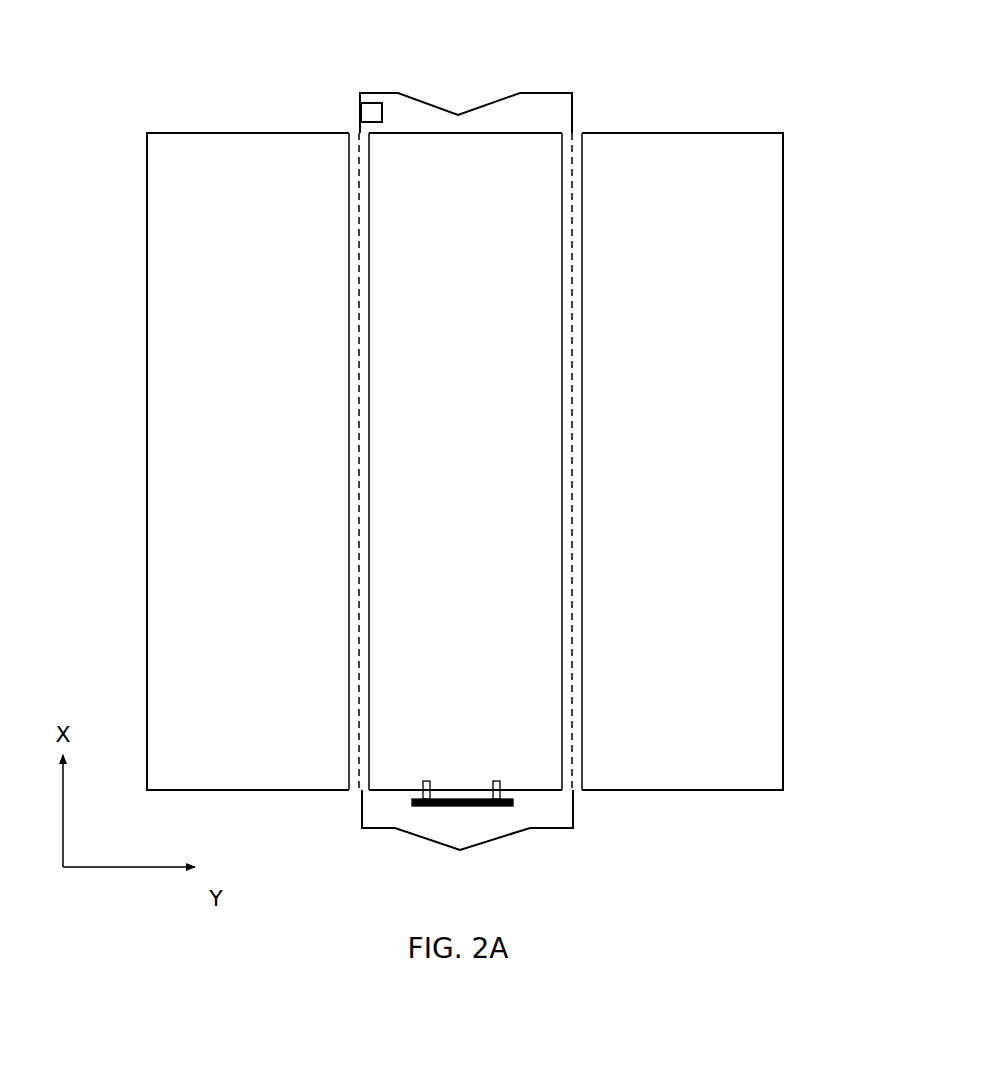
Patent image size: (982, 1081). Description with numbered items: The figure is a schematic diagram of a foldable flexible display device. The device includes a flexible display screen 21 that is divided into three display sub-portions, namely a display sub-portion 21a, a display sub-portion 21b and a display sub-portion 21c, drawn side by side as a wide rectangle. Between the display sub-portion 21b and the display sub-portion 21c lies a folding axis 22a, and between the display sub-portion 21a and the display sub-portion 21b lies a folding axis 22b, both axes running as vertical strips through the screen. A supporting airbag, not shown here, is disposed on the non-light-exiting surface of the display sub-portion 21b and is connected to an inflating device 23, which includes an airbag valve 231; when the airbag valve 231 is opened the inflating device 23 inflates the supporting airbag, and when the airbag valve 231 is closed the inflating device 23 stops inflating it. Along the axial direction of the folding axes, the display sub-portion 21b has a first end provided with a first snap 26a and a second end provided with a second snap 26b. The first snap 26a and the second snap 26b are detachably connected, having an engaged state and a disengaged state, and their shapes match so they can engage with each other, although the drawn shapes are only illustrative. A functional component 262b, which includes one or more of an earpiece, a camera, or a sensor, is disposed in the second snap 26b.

The flexible display screen 21 is at (484, 395).
The display sub-portion 21a is at (160, 226).
The display sub-portion 21b is at (545, 195).
The display sub-portion 21c is at (758, 283).
The folding axis 22a is at (580, 687).
The folding axis 22b is at (350, 682).
The inflating device 23 is at (485, 810).
The airbag valve 231 is at (418, 792).
The first snap 26a is at (560, 817).
The second snap 26b is at (446, 98).
The functional component 262b is at (370, 118).